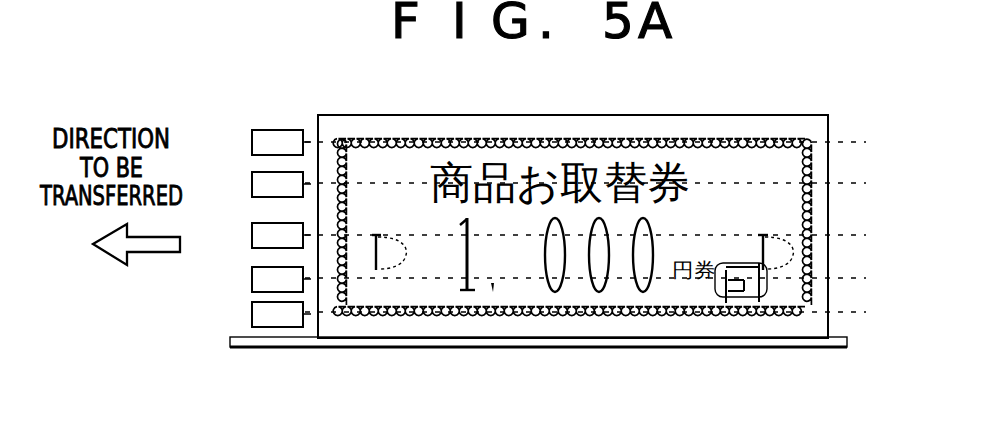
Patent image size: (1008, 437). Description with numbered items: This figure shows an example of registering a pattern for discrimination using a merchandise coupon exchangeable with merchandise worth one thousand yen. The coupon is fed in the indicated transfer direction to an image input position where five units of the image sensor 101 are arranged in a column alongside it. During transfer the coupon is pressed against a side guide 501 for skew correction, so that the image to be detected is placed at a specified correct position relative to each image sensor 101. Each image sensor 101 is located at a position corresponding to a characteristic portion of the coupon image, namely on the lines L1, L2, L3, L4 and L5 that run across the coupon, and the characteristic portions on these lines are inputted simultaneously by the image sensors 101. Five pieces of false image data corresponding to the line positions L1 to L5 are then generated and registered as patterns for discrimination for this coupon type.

The image sensor 101 is at (273, 129).
The side guide 501 is at (727, 349).
The line L1 is at (861, 138).
The line L2 is at (861, 179).
The line L3 is at (861, 231).
The line L4 is at (861, 274).
The line L5 is at (861, 308).